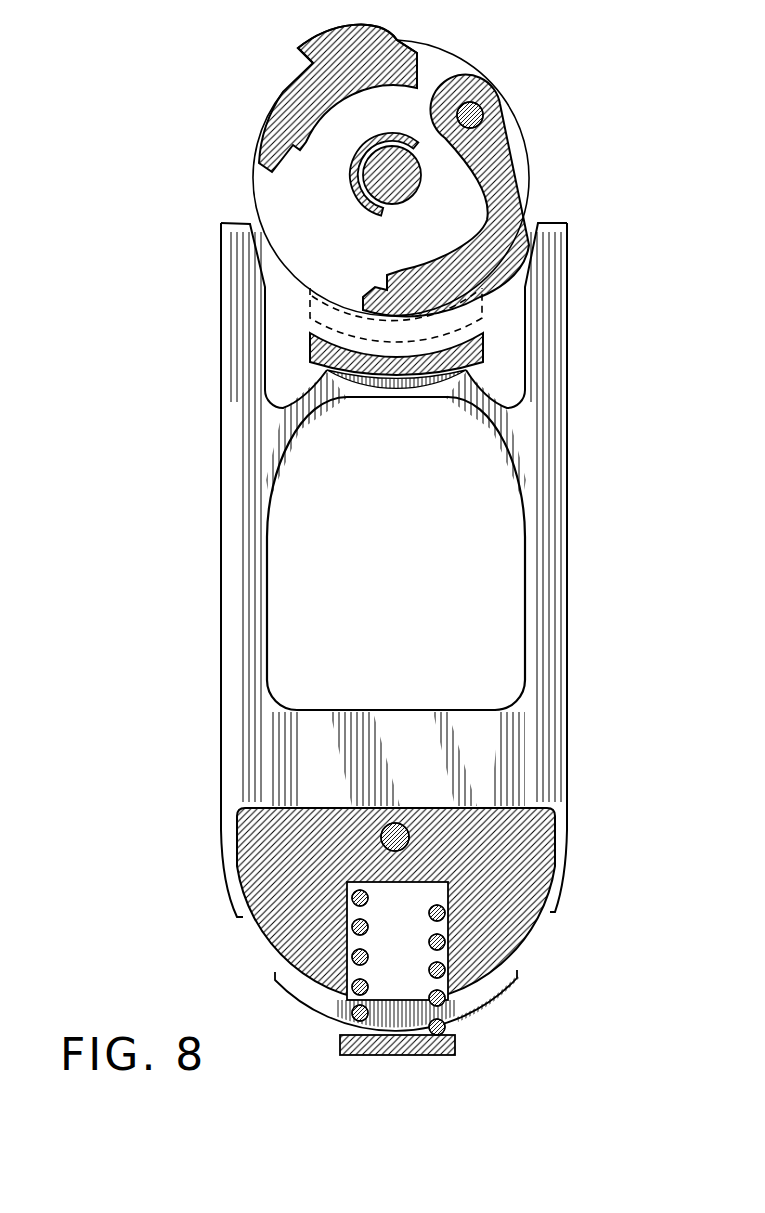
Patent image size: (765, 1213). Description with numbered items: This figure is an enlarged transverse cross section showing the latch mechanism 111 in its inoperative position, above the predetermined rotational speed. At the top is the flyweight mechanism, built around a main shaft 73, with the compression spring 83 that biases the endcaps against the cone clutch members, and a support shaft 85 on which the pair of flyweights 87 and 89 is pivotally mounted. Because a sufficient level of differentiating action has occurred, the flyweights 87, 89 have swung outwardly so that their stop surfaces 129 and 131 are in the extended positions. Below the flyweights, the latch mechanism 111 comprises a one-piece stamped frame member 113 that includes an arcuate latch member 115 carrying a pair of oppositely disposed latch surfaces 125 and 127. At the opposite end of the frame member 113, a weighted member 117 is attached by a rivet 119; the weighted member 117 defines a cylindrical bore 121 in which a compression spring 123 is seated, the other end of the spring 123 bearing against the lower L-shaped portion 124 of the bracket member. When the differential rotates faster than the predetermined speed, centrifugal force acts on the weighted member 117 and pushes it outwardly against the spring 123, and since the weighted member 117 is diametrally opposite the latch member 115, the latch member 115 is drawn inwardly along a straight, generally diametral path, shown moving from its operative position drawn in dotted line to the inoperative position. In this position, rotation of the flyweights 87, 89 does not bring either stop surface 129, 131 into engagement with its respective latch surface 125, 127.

The main shaft 73 is at (395, 183).
The compression spring 83 is at (352, 165).
The support shaft 85 is at (478, 110).
The flyweight 87 is at (372, 42).
The flyweight 89 is at (500, 164).
The latch mechanism 111 is at (185, 391).
The frame member 113 is at (552, 423).
The latch member 115 is at (382, 370).
The weighted member 117 is at (510, 942).
The rivet 119 is at (396, 823).
The cylindrical bore 121 is at (378, 888).
The compression spring 123 is at (347, 920).
The L-shaped portion 124 is at (445, 1043).
The latch surface 125 is at (312, 347).
The latch surface 127 is at (485, 345).
The stop surface 129 is at (300, 55).
The stop surface 131 is at (483, 307).